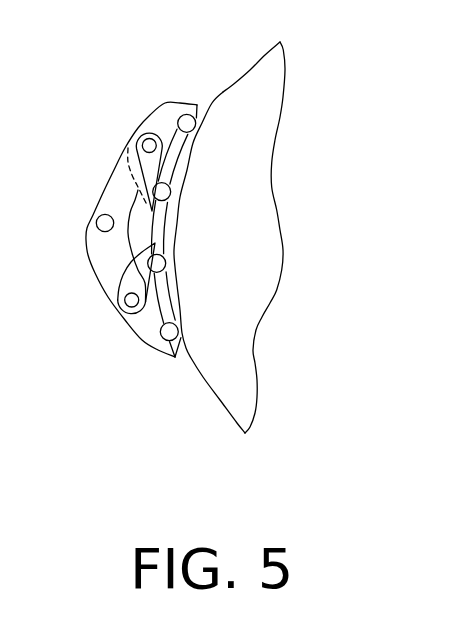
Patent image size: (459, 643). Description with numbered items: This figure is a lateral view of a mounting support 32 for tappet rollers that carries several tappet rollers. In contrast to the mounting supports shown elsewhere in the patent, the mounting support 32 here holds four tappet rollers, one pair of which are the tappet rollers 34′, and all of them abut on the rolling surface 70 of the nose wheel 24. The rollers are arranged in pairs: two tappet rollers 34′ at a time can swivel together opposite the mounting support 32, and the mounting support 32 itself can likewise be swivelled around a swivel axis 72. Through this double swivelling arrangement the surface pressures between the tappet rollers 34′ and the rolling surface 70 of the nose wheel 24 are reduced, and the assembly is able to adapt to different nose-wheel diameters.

The nose wheel 24 is at (227, 362).
The rolling surface 70 is at (263, 53).
The mounting support 32 is at (109, 190).
The tappet rollers 34′ is at (210, 57).
The swivel axis 72 is at (97, 226).